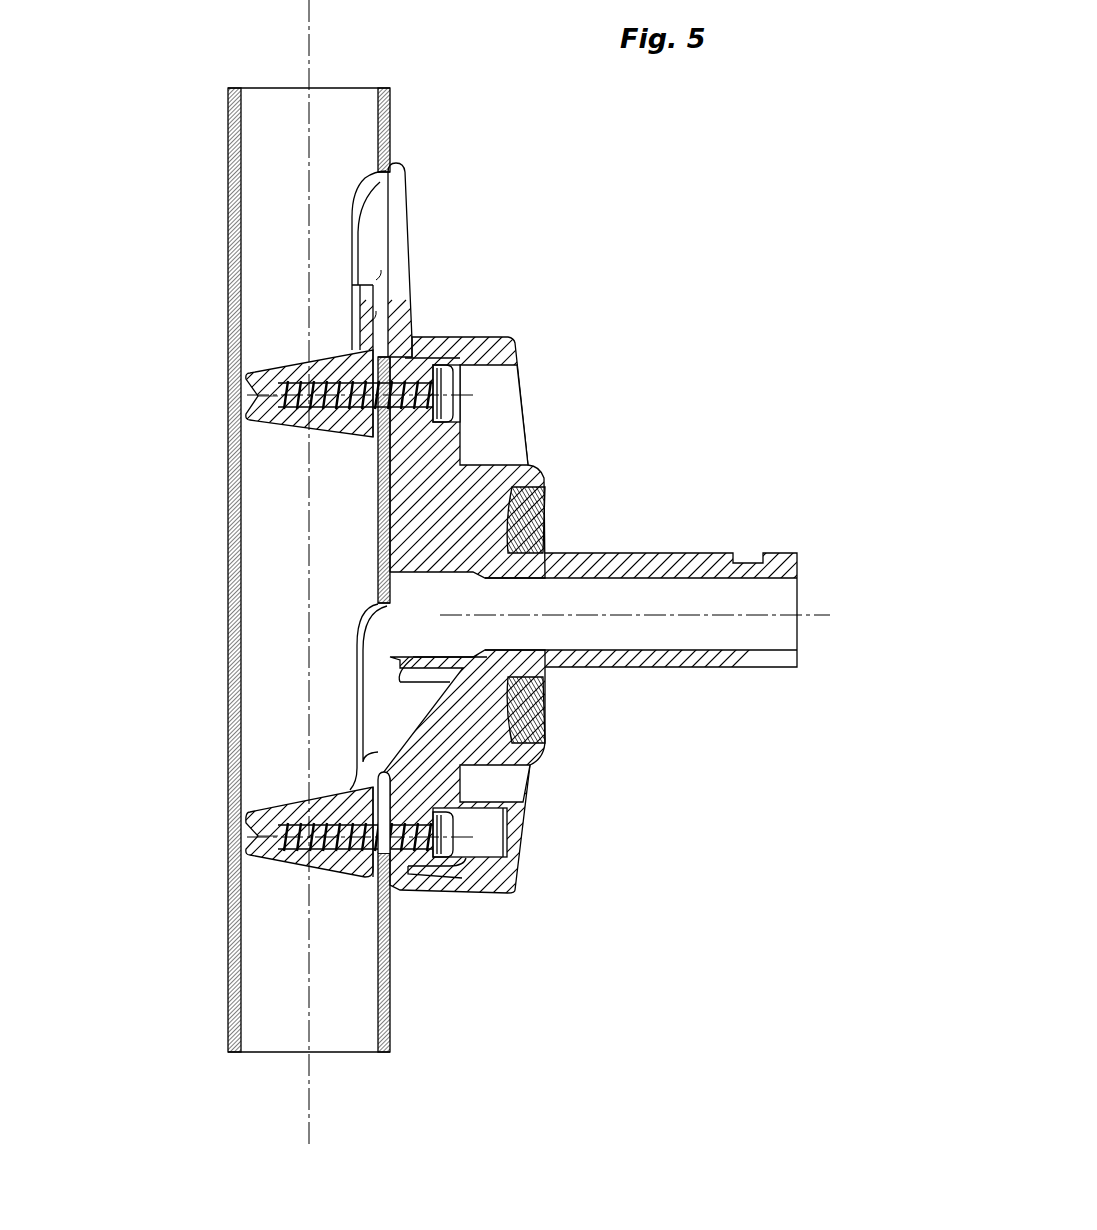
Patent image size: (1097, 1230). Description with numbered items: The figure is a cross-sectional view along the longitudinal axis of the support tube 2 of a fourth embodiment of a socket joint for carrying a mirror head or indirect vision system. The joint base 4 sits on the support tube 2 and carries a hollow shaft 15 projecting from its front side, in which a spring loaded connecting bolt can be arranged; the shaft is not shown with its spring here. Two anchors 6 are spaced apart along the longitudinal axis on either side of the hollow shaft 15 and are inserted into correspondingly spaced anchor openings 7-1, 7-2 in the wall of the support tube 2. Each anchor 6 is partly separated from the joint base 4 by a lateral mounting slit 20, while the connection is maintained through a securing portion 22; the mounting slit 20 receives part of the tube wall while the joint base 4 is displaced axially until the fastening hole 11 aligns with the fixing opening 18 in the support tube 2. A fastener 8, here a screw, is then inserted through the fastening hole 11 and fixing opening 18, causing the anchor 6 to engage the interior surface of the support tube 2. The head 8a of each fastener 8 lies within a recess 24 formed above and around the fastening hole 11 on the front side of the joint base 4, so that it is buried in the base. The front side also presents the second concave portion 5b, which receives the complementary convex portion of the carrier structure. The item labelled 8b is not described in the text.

The support tube 2 is at (229, 155).
The joint base 4 is at (492, 731).
The second concave portion 5b is at (547, 522).
The anchor 6 is at (375, 853).
The anchor opening 7-1 is at (379, 222).
The anchor opening 7-2 is at (377, 680).
The fastener 8 is at (434, 358).
The head 8a is at (441, 407).
The insertion bore 8b is at (248, 407).
The fastening hole 11 is at (247, 378).
The hollow shaft 15 is at (700, 551).
The fixing opening 18 is at (373, 413).
The lateral mounting slit 20 is at (376, 428).
The securing portion 22 is at (362, 330).
The recess 24 is at (512, 440).